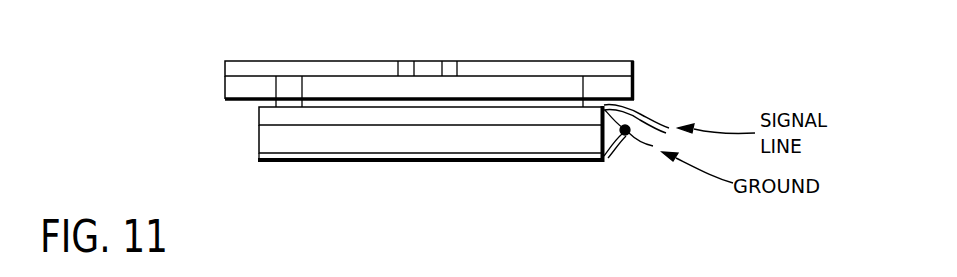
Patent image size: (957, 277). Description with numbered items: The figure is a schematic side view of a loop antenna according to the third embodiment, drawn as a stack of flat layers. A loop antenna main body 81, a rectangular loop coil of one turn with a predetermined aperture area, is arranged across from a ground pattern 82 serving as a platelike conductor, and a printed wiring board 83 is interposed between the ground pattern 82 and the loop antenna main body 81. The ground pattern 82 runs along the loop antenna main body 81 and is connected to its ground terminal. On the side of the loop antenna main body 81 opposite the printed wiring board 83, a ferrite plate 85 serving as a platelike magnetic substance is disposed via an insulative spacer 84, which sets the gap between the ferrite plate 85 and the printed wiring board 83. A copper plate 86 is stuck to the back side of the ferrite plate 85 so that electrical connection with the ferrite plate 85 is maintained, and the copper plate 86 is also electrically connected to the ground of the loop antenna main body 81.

The loop antenna main body 81 is at (302, 107).
The ground pattern 82 is at (612, 68).
The printed wiring board 83 is at (625, 88).
The spacer 84 is at (262, 117).
The ferrite plate 85 is at (263, 141).
The copper plate 86 is at (262, 160).